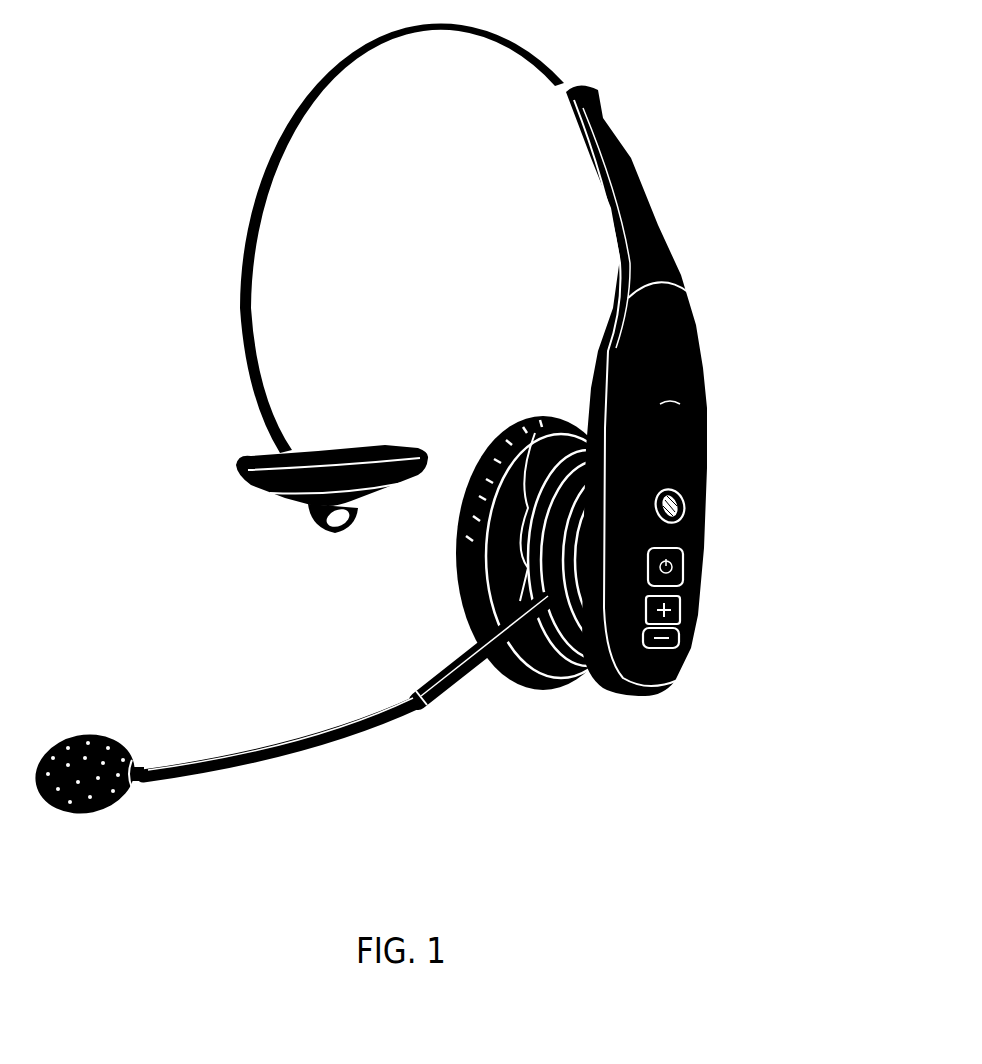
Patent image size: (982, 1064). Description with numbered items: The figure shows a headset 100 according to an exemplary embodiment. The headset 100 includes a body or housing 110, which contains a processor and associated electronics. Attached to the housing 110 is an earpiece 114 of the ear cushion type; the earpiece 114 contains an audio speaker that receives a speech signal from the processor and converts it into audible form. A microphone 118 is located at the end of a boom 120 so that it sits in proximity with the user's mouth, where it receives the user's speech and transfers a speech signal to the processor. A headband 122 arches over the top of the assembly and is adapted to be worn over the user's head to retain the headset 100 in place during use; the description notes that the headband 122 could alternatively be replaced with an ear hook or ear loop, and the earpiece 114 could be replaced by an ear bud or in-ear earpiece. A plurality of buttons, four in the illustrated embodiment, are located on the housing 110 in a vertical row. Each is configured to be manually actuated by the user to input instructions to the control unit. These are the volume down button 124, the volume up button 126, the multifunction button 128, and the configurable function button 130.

The headset 100 is at (676, 24).
The housing 110 is at (697, 352).
The earpiece 114 is at (435, 526).
The microphone 118 is at (88, 725).
The boom 120 is at (372, 725).
The headband 122 is at (333, 52).
The volume down button 124 is at (668, 633).
The volume up button 126 is at (675, 596).
The multifunction button 128 is at (675, 562).
The configurable function button 130 is at (687, 493).